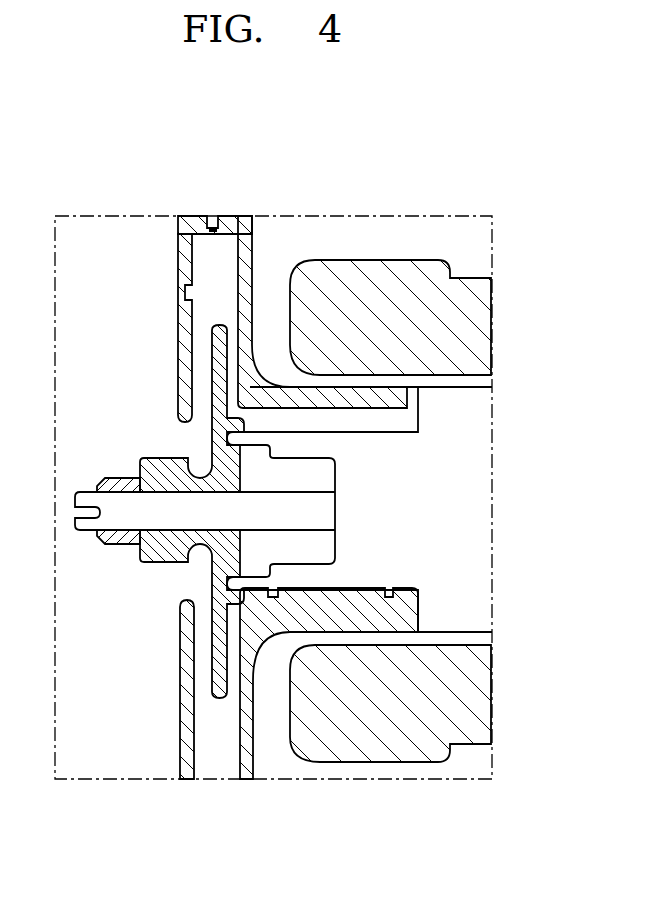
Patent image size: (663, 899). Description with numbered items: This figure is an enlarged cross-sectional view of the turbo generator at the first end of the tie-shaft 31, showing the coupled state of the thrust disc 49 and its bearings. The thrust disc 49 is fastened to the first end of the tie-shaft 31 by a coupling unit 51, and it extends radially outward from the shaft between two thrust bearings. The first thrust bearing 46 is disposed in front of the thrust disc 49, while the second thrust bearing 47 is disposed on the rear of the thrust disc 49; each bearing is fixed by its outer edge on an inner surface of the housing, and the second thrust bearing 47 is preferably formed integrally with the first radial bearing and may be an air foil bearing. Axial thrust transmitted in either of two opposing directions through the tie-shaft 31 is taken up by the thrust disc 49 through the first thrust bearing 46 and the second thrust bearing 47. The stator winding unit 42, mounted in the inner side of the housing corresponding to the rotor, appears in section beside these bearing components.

The tie-shaft 31 is at (188, 513).
The stator winding unit 42 is at (382, 745).
The first thrust bearing 46 is at (180, 380).
The second thrust bearing 47 is at (252, 248).
The thrust disc 49 is at (220, 679).
The coupling unit 51 is at (132, 537).